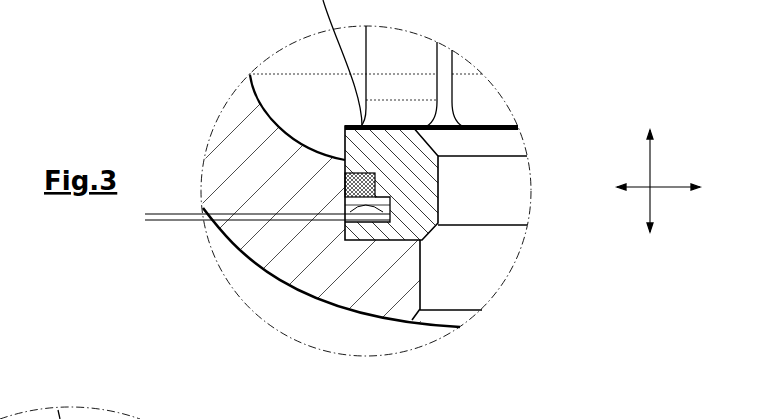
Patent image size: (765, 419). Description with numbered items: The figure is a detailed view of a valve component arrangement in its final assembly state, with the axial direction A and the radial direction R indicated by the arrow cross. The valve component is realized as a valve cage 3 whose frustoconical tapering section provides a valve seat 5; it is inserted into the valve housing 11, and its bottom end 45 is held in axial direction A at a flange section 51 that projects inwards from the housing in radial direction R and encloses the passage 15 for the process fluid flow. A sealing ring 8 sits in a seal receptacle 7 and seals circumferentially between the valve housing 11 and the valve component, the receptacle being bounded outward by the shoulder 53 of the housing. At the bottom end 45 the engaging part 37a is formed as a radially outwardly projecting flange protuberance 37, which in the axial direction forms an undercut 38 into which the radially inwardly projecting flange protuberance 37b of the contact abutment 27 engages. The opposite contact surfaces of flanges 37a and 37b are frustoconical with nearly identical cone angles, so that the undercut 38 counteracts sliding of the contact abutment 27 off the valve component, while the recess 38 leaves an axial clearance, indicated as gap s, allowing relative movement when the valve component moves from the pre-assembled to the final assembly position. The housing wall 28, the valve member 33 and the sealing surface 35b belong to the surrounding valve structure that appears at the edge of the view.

The valve cage 3 is at (31, 418).
The valve seat 5 is at (433, 135).
The seal receptacle 7 is at (333, 178).
The sealing ring 8 is at (345, 150).
The valve housing 11 is at (382, 209).
The passage 15 is at (482, 190).
The contact abutment 27 is at (347, 242).
The housing wall 28 is at (345, 216).
The valve member 33 is at (111, 7).
The sealing surface 35b is at (98, 418).
The flange protuberance 37 is at (381, 235).
The engaging part 37a is at (390, 232).
The radially inwardly projecting flange protuberance 37b is at (392, 208).
The undercut 38 is at (428, 233).
The bottom end 45 is at (438, 170).
The flange section 51 is at (407, 282).
The shoulder 53 is at (237, 170).
The gap width s is at (163, 198).
The radial direction R is at (678, 183).
The axial direction A is at (652, 196).